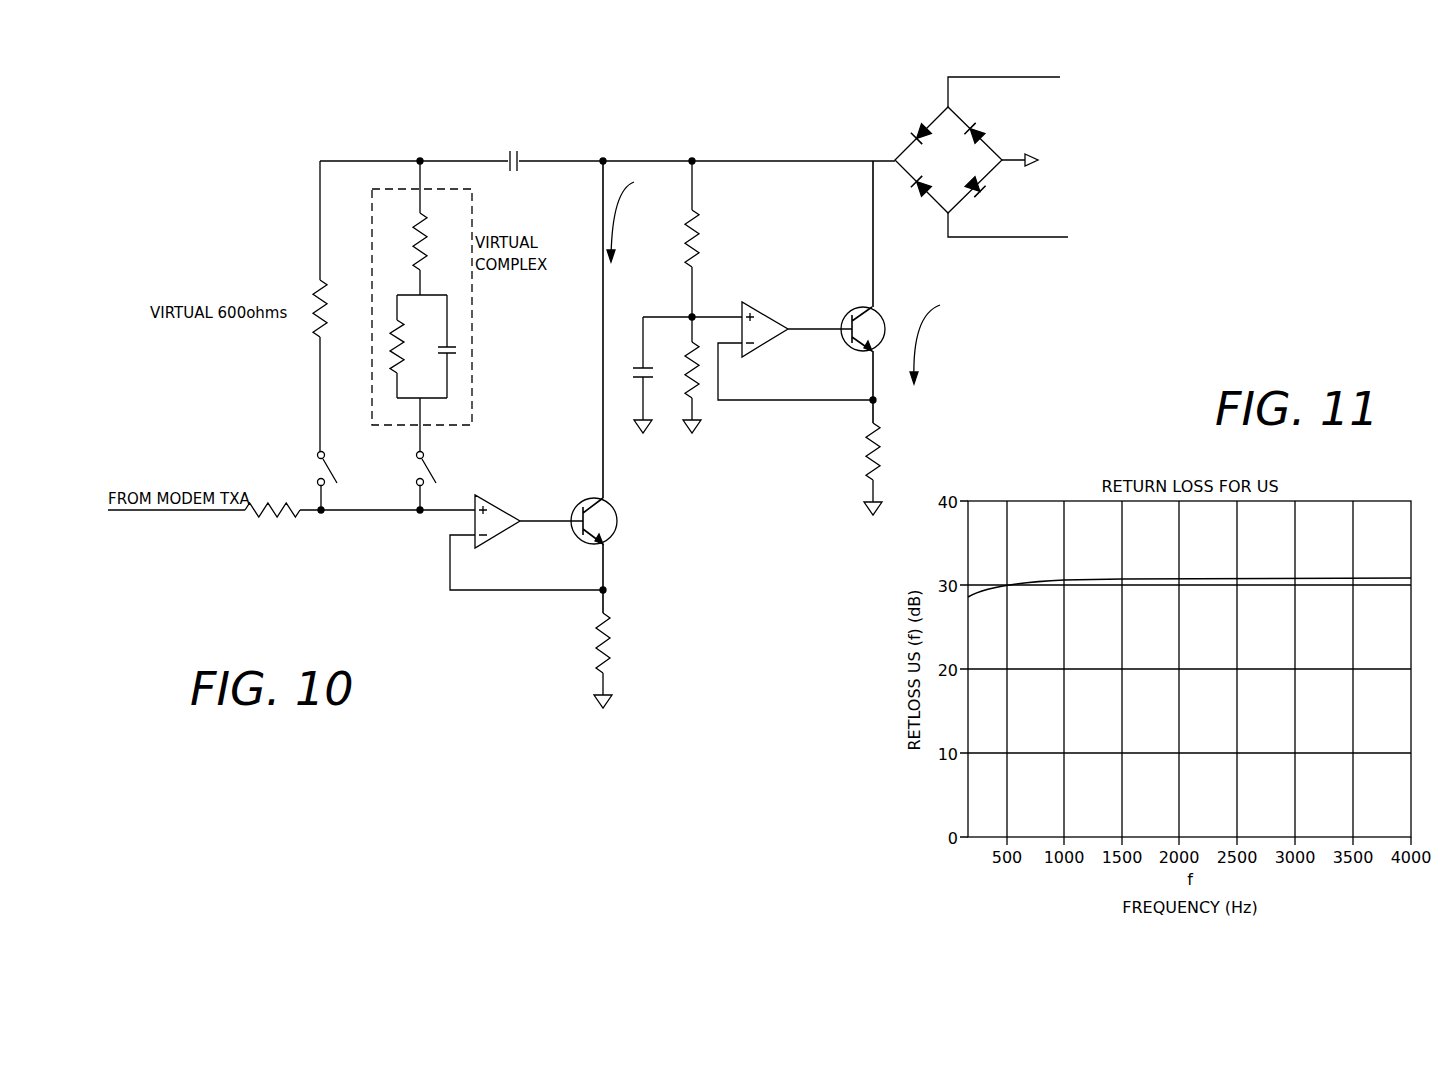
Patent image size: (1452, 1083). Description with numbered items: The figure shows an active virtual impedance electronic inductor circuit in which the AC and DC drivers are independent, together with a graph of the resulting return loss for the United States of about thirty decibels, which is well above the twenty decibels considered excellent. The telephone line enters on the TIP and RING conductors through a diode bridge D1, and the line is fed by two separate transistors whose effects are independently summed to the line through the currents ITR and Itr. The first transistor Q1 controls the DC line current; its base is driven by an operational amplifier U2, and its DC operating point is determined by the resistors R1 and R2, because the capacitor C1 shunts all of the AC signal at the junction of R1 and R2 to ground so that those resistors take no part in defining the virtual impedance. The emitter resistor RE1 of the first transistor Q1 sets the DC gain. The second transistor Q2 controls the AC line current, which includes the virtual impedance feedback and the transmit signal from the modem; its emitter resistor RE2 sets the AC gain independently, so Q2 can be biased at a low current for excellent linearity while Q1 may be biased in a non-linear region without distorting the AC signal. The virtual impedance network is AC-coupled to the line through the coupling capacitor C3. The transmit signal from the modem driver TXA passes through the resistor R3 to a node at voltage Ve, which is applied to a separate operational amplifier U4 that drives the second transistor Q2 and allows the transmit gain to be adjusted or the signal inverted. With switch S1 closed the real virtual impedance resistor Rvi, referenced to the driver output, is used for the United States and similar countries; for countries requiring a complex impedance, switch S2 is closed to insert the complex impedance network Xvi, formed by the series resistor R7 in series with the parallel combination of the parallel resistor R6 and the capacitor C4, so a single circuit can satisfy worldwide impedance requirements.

The coupling capacitor C3 is at (513, 172).
The real virtual impedance resistor Rvi is at (334, 306).
The switch S1 is at (337, 479).
The switch S2 is at (436, 479).
The resistor of the TXA driver R3 is at (291, 520).
The node voltage Ve is at (525, 559).
The complex impedance of the network Xvi is at (435, 307).
The series resistor of the complex impedance network R7 is at (434, 228).
The parallel resistor of the complex impedance network R6 is at (408, 346).
The capacitor of the complex impedance network C4 is at (453, 346).
The operational amplifier U4 is at (526, 534).
The second transistor Q2 is at (604, 387).
The emitter resistor of Q2 RE2 is at (621, 660).
The AC line current Itr is at (630, 218).
The resistor R1 is at (681, 251).
The resistor R2 is at (682, 387).
The capacitor C1 is at (679, 375).
The operational amplifier U2 is at (795, 342).
The first transistor Q1 is at (873, 292).
The emitter resistor of Q1 RE1 is at (890, 469).
The DC line current ITR is at (937, 339).
The diode bridge D1 is at (963, 153).
The tip line conductor TIP is at (1004, 82).
The ring line conductor RING is at (1008, 225).